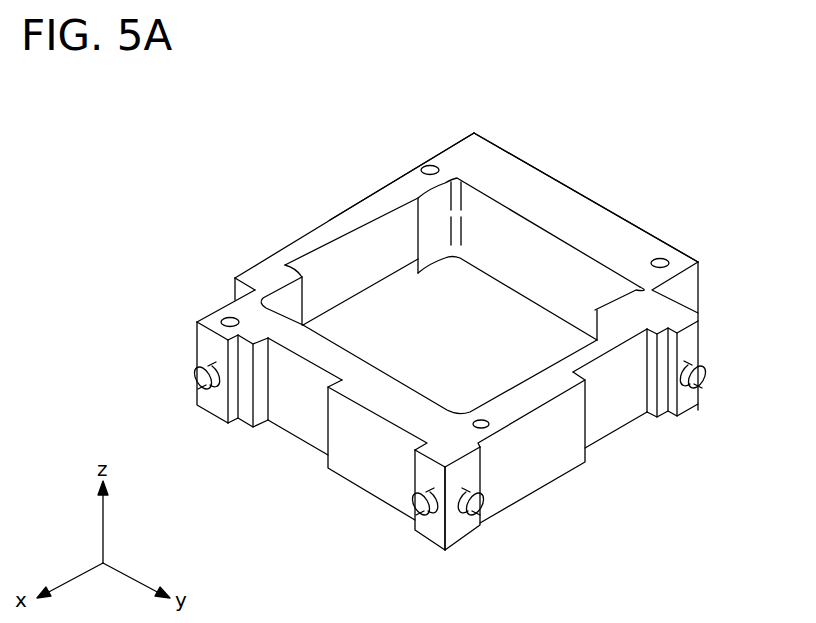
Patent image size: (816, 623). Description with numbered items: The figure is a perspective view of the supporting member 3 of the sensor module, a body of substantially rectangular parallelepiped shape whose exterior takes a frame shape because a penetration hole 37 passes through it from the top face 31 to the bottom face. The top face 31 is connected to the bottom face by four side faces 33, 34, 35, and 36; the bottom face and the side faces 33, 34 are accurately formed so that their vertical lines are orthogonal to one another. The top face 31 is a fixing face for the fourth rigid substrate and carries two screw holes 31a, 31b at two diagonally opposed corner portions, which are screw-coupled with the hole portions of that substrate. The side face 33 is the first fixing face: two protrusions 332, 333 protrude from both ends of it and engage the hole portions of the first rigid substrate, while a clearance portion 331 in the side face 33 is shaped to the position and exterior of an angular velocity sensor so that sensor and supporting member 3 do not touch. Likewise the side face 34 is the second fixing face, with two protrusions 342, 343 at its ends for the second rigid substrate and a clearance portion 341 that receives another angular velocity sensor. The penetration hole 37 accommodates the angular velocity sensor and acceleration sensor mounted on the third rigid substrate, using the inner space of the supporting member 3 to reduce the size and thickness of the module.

The supporting member 3 is at (600, 176).
The top face 31 is at (490, 170).
The screw hole 31a is at (428, 170).
The screw hole 31b is at (490, 424).
The side face 33 is at (215, 402).
The clearance portion 331 is at (298, 420).
The protrusion 332 is at (418, 512).
The protrusion 333 is at (205, 375).
The side face 34 is at (688, 400).
The clearance portion 341 is at (613, 405).
The protrusion 342 is at (702, 372).
The protrusion 343 is at (482, 512).
The side face 35 is at (642, 227).
The side face 36 is at (341, 207).
The penetration hole 37 is at (485, 302).